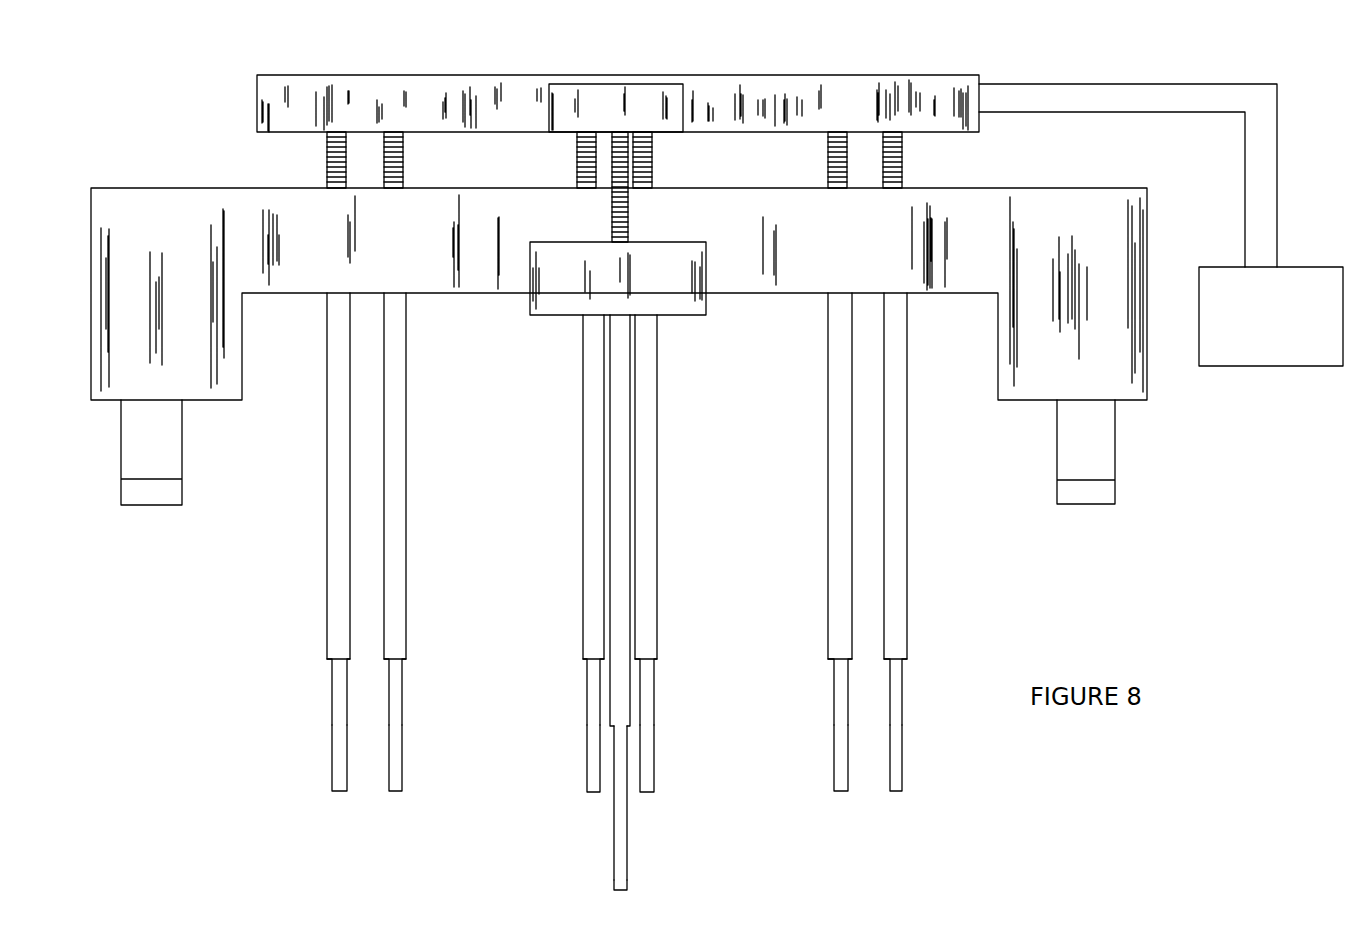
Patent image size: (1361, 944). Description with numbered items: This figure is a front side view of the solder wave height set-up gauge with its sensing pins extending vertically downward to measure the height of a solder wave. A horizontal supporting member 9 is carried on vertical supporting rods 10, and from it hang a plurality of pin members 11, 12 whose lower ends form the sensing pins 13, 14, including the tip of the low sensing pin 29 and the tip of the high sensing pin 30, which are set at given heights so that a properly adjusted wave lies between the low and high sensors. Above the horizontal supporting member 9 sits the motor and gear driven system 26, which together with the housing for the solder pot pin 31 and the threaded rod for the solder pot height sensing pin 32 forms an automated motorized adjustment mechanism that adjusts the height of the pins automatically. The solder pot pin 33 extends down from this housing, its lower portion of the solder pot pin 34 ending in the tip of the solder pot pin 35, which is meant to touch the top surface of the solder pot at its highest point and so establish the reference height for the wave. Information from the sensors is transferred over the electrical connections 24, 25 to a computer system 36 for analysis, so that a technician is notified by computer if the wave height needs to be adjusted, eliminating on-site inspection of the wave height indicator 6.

The wave height indicator 6 is at (592, 355).
The horizontal supporting member 9 is at (152, 298).
The vertical supporting rods 10 is at (165, 461).
The pin member 11 is at (388, 405).
The pin member 12 is at (330, 442).
The sensing pin 13 is at (400, 758).
The sensing pin 14 is at (342, 750).
The electrical connection 24 is at (1245, 205).
The electrical connection 25 is at (1277, 208).
The motor and gear driven system 26 is at (345, 90).
The tip of low sensing pin 29 is at (395, 158).
The tip of high sensing pin 30 is at (623, 100).
The housing for solder pot pin 31 is at (563, 283).
The threaded rod for solder pot height sensing pin 32 is at (626, 203).
The solder pot pin 33 is at (623, 675).
The lower portion of solder pot pin 34 is at (623, 843).
The tip of solder pot pin 35 is at (620, 888).
The computer system 36 is at (1292, 333).